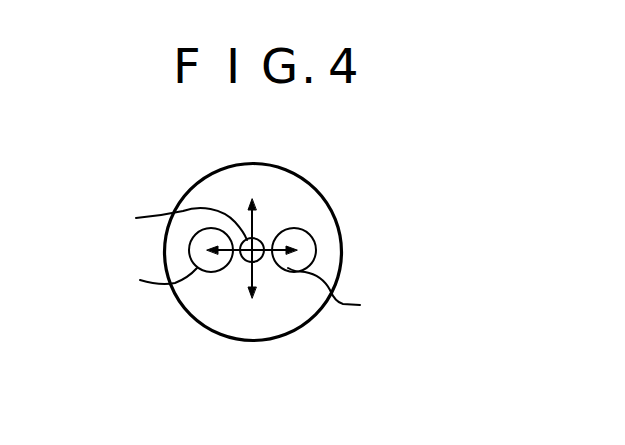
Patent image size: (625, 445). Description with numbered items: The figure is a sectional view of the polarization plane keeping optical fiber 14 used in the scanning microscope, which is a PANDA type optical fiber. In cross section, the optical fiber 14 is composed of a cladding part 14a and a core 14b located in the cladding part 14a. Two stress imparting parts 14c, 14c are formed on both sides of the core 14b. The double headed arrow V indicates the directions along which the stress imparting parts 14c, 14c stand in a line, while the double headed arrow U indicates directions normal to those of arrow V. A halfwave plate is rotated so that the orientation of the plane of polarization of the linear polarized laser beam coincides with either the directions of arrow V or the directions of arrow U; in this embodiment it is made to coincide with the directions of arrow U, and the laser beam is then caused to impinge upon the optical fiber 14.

The polarization plane keeping optical fiber 14 is at (251, 250).
The cladding part 14a is at (330, 249).
The core 14b is at (166, 239).
The stress imparting parts 14c is at (246, 272).
The double headed arrow U is at (253, 222).
The double headed arrow V is at (279, 258).